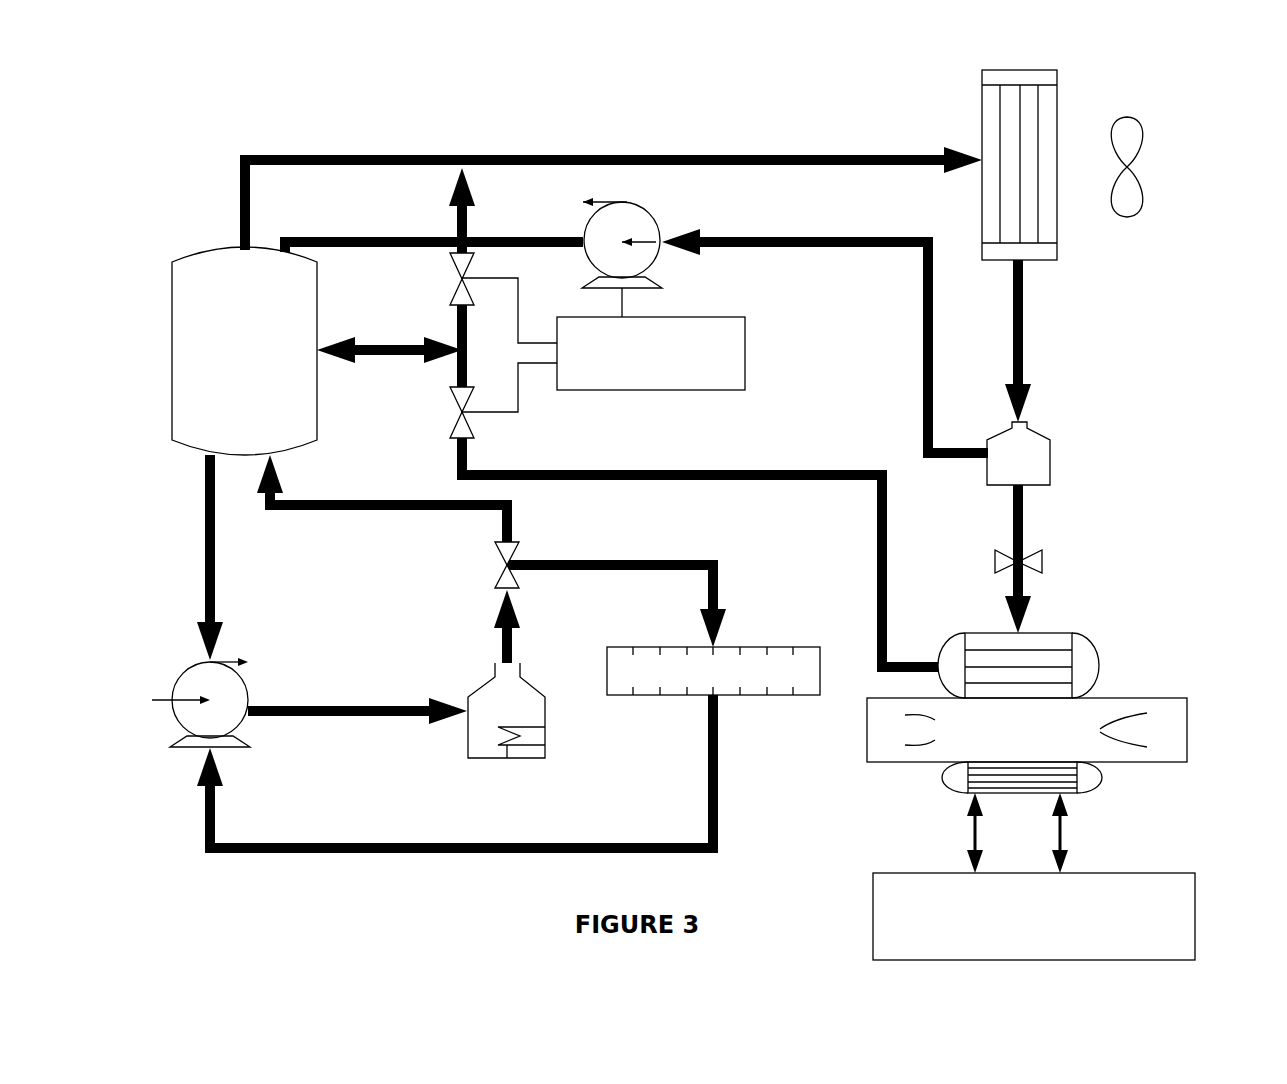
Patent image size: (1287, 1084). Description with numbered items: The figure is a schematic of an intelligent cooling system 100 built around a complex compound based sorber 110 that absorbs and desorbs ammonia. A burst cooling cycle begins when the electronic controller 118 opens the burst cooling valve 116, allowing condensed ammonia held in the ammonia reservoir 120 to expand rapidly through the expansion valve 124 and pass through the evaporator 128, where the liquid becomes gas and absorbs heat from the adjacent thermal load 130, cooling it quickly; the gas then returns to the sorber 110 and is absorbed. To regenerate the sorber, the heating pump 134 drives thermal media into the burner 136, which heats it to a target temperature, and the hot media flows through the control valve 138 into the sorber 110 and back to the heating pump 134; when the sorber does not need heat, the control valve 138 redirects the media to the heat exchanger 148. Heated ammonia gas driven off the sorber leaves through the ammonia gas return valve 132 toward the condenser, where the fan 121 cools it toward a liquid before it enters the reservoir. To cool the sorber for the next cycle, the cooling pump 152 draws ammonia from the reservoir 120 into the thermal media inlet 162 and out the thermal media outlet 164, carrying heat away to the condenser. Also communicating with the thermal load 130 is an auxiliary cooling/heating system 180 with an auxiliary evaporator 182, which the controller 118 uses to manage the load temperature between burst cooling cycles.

The intelligent cooling system 100 is at (370, 128).
The sorber 110 is at (200, 252).
The thermal media outlet 164 is at (252, 246).
The thermal media inlet 162 is at (288, 252).
The ammonia gas return valve 132 is at (473, 270).
The burst cooling valve 116 is at (473, 426).
The cooling pump 152 is at (647, 200).
The electronic controller 118 is at (747, 353).
The fan 121 is at (1130, 168).
The ammonia reservoir 120 is at (1052, 455).
The expansion valve 124 is at (1043, 566).
The evaporator 128 is at (1100, 673).
The thermal load 130 is at (1188, 730).
The auxiliary evaporator 182 is at (1093, 788).
The auxiliary cooling/heating system 180 is at (1197, 908).
The heating pump 134 is at (250, 685).
The burner 136 is at (546, 713).
The control valve 138 is at (516, 558).
The heat exchanger 148 is at (792, 655).